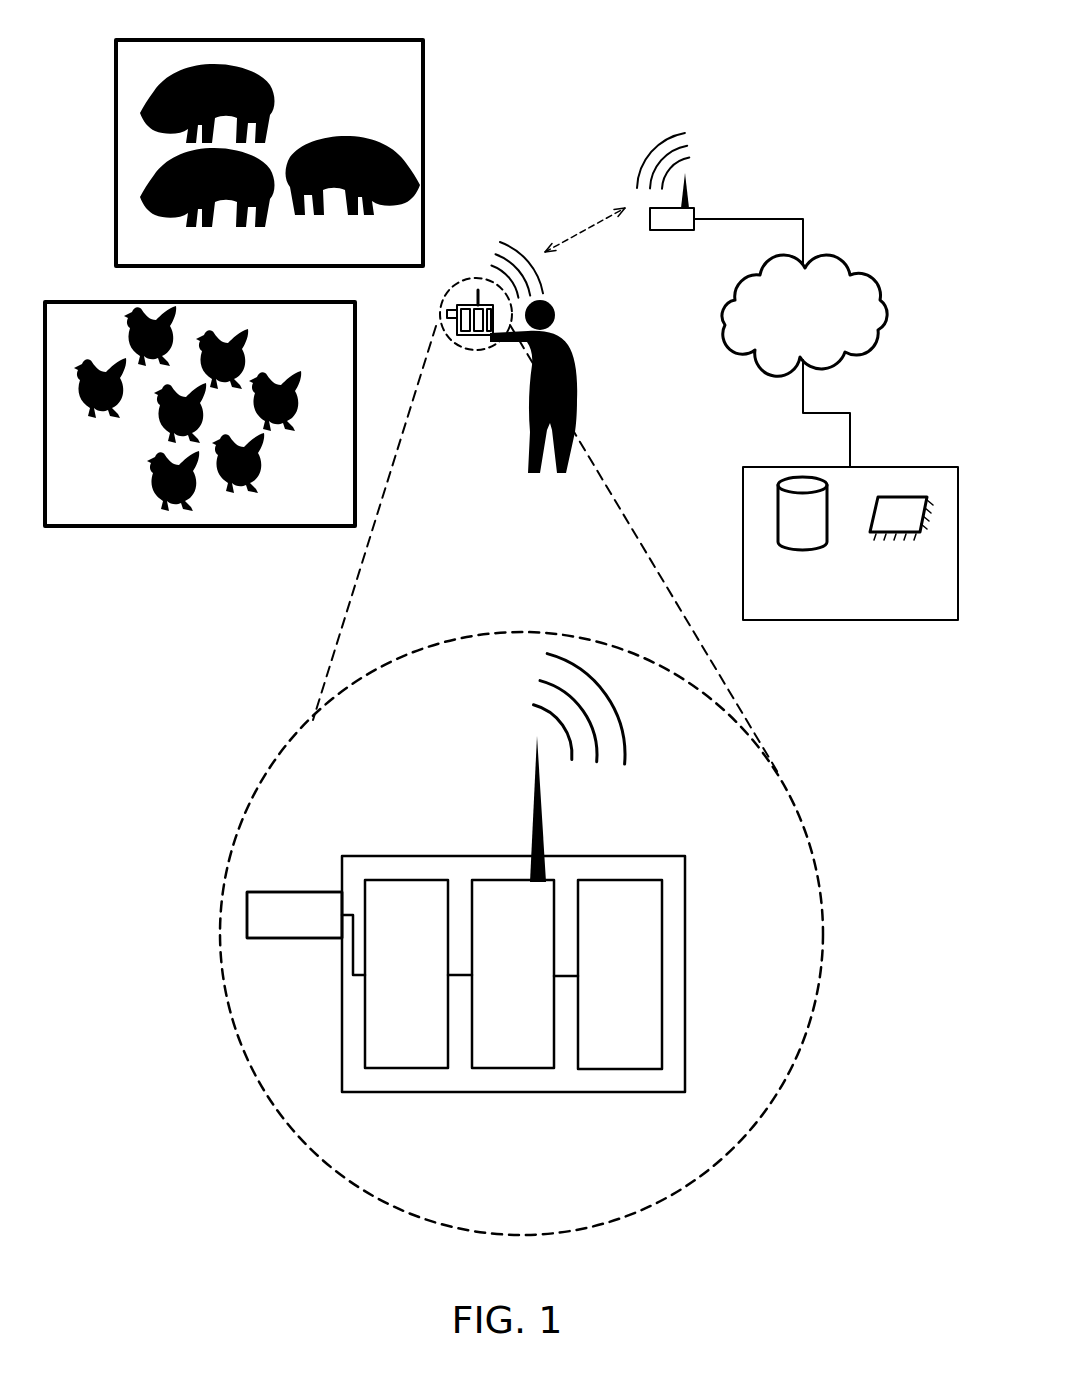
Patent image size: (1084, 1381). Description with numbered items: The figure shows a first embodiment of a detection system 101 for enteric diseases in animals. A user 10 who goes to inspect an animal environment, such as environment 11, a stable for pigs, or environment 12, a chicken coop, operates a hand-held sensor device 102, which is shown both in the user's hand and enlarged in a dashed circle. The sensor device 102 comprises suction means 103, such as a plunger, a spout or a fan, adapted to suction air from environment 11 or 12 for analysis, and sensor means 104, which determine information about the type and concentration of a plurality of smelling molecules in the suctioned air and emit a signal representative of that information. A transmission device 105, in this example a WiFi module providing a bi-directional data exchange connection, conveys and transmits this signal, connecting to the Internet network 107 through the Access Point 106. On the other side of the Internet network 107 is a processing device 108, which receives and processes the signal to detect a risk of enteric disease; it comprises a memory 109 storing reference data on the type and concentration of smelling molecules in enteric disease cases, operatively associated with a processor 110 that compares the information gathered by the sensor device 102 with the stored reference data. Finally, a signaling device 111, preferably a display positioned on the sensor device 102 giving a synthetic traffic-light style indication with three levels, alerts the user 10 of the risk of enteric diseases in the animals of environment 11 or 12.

The user 10 is at (532, 382).
The environment (stable for pigs) 11 is at (142, 85).
The environment (chicken coop) 12 is at (140, 508).
The detection system 101 is at (752, 83).
The sensor device 102 is at (463, 305).
The suction means 103 is at (272, 928).
The sensor means 104 is at (378, 1070).
The transmission device 105 is at (483, 1070).
The Access Point 106 is at (695, 210).
The Internet network 107 is at (804, 361).
The processing device 108 is at (907, 630).
The memory 109 is at (778, 513).
The processor 110 is at (867, 513).
The signaling device 111 is at (602, 1069).